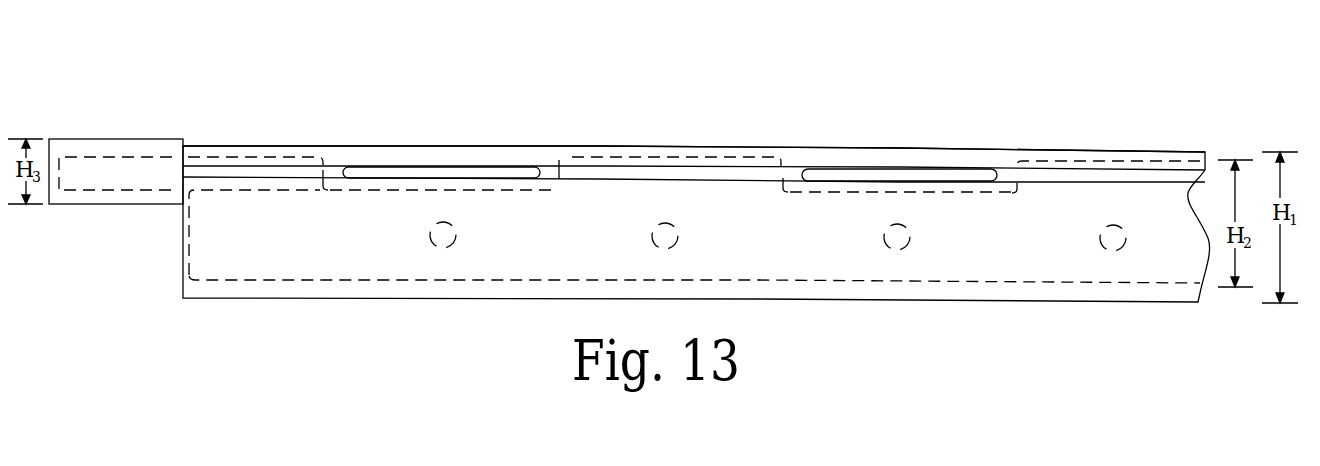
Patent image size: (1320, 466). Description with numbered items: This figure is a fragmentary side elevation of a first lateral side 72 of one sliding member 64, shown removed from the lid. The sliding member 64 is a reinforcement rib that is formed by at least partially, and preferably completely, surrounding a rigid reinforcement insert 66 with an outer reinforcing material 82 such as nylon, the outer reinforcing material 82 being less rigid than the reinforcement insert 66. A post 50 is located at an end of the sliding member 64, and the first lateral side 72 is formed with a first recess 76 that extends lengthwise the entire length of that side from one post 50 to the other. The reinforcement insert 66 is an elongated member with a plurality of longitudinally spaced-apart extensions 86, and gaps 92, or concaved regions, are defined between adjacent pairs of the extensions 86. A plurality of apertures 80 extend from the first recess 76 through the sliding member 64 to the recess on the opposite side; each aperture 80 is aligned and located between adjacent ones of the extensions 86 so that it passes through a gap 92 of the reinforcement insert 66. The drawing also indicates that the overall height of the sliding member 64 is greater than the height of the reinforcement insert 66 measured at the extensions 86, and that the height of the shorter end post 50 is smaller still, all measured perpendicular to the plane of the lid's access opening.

The post 50 is at (85, 140).
The sliding member 64 is at (917, 100).
The reinforcement insert 66 is at (845, 230).
The first lateral side 72 is at (290, 257).
The first recess 76 is at (600, 175).
The aperture 80 is at (373, 175).
The outer reinforcing material 82 is at (910, 160).
The extension 86 is at (213, 143).
The gap 92 is at (430, 190).